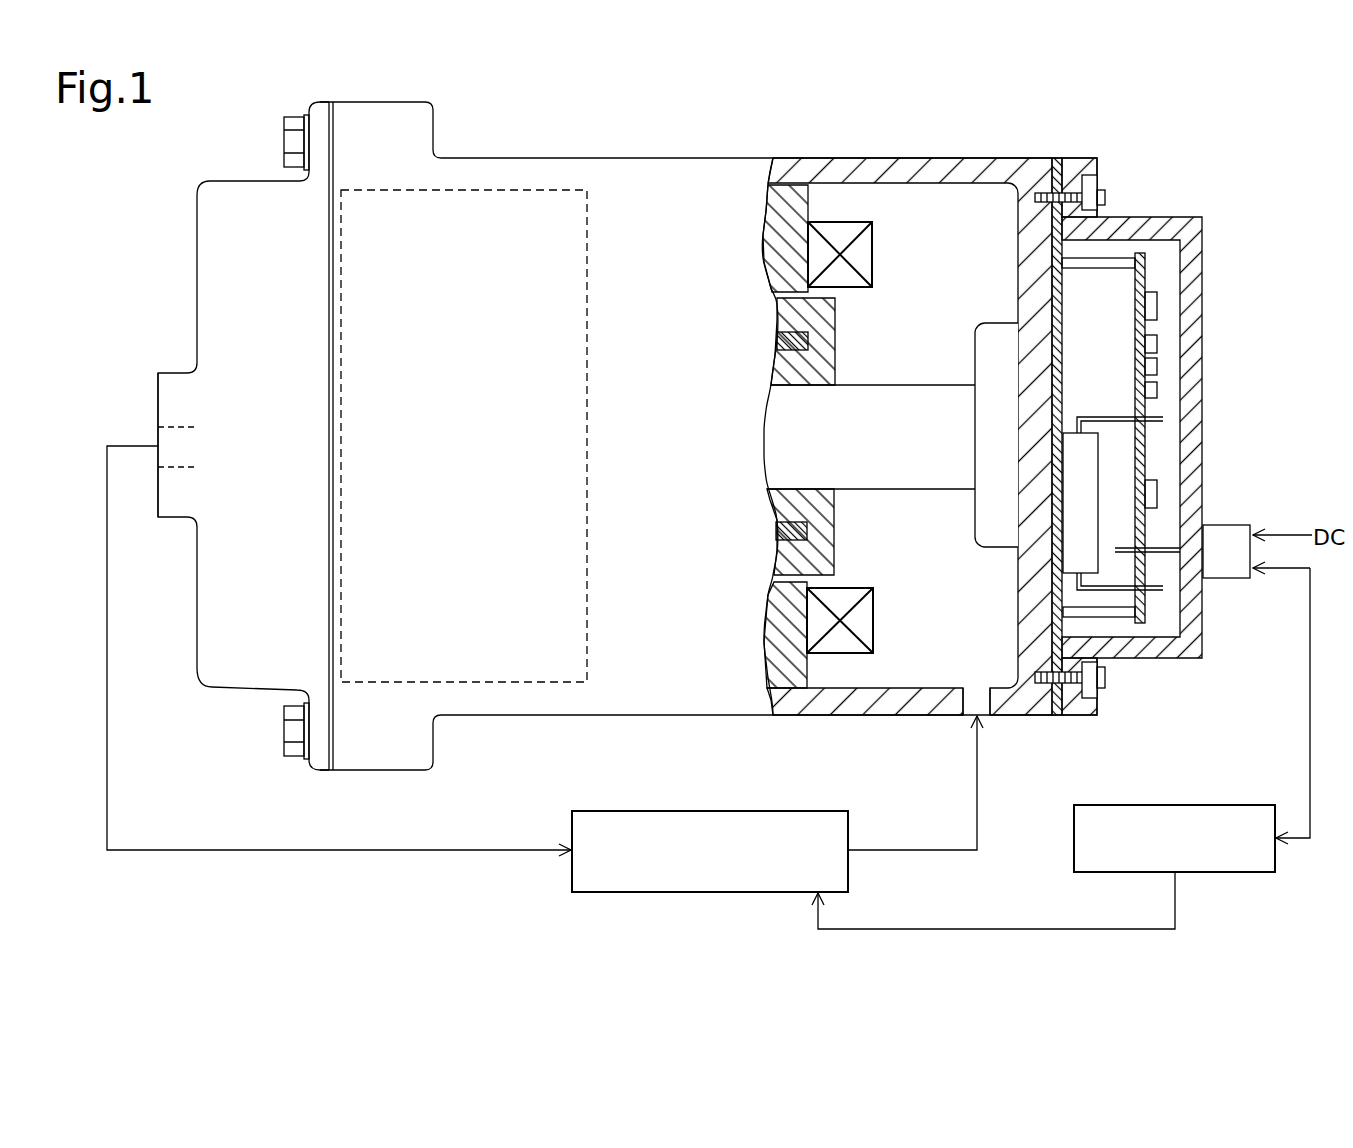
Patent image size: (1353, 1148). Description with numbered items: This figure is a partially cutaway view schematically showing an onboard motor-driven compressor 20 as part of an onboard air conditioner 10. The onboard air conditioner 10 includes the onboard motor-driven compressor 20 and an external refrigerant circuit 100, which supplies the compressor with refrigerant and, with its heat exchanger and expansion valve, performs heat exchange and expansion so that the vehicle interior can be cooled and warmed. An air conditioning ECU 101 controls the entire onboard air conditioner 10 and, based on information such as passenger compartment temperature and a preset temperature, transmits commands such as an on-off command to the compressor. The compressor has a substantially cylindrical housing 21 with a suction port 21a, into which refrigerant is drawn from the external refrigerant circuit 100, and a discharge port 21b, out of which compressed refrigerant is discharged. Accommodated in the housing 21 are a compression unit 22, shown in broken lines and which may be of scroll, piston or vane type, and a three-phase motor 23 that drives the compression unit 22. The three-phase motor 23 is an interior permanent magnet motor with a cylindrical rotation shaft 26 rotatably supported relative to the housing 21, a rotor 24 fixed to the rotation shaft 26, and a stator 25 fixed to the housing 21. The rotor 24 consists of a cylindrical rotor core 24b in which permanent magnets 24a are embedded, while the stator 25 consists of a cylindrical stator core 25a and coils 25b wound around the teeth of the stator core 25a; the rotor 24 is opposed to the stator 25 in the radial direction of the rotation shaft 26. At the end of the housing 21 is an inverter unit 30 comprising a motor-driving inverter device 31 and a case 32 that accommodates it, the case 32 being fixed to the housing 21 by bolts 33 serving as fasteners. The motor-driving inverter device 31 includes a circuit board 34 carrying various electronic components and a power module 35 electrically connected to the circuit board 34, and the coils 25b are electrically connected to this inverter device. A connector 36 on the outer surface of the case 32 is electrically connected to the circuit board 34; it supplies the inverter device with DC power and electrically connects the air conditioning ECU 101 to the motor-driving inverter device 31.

The onboard air conditioner 10 is at (1250, 143).
The onboard motor-driven compressor 20 is at (632, 157).
The housing 21 is at (567, 158).
The suction port 21a is at (980, 692).
The discharge port 21b is at (150, 428).
The compression unit 22 is at (500, 190).
The three-phase motor 23 is at (803, 184).
The rotor 24 is at (835, 345).
The magnets 24a is at (777, 341).
The rotor core 24b is at (790, 378).
The stator 25 is at (947, 223).
The stator core 25a is at (803, 235).
The coils 25b is at (862, 262).
The rotation shaft 26 is at (903, 475).
The inverter unit 30 is at (1252, 222).
The motor-driving inverter device 31 is at (1157, 272).
The case 32 is at (1203, 262).
The bolts 33 is at (1105, 197).
The circuit board 34 is at (1148, 444).
The power module 35 is at (1100, 526).
The connector 36 is at (1232, 580).
The external refrigerant circuit 100 is at (805, 811).
The air conditioning ECU 101 is at (1213, 805).